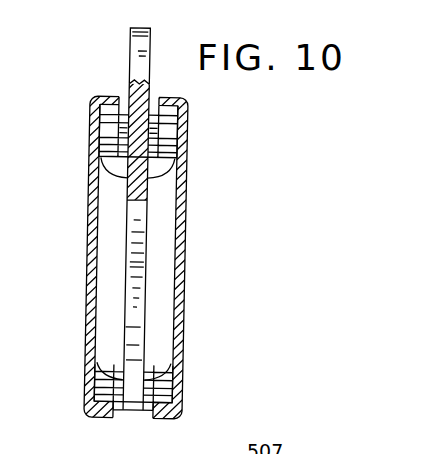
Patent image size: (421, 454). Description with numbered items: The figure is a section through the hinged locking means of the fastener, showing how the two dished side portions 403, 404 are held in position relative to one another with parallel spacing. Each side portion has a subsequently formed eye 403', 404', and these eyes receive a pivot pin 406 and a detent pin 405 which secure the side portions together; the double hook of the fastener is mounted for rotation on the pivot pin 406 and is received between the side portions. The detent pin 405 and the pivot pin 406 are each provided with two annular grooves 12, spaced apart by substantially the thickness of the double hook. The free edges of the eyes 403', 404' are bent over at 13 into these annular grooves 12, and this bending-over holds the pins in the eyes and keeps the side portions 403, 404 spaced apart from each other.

The annular grooves 12 is at (127, 106).
The bent-over edges of the eyes 13 is at (100, 137).
The dished side portion 403 is at (210, 226).
The eye 403' is at (196, 271).
The dished side portion 404 is at (210, 226).
The eye 404' is at (73, 273).
The detent pin 405 is at (182, 395).
The pivot pin 406 is at (136, 133).